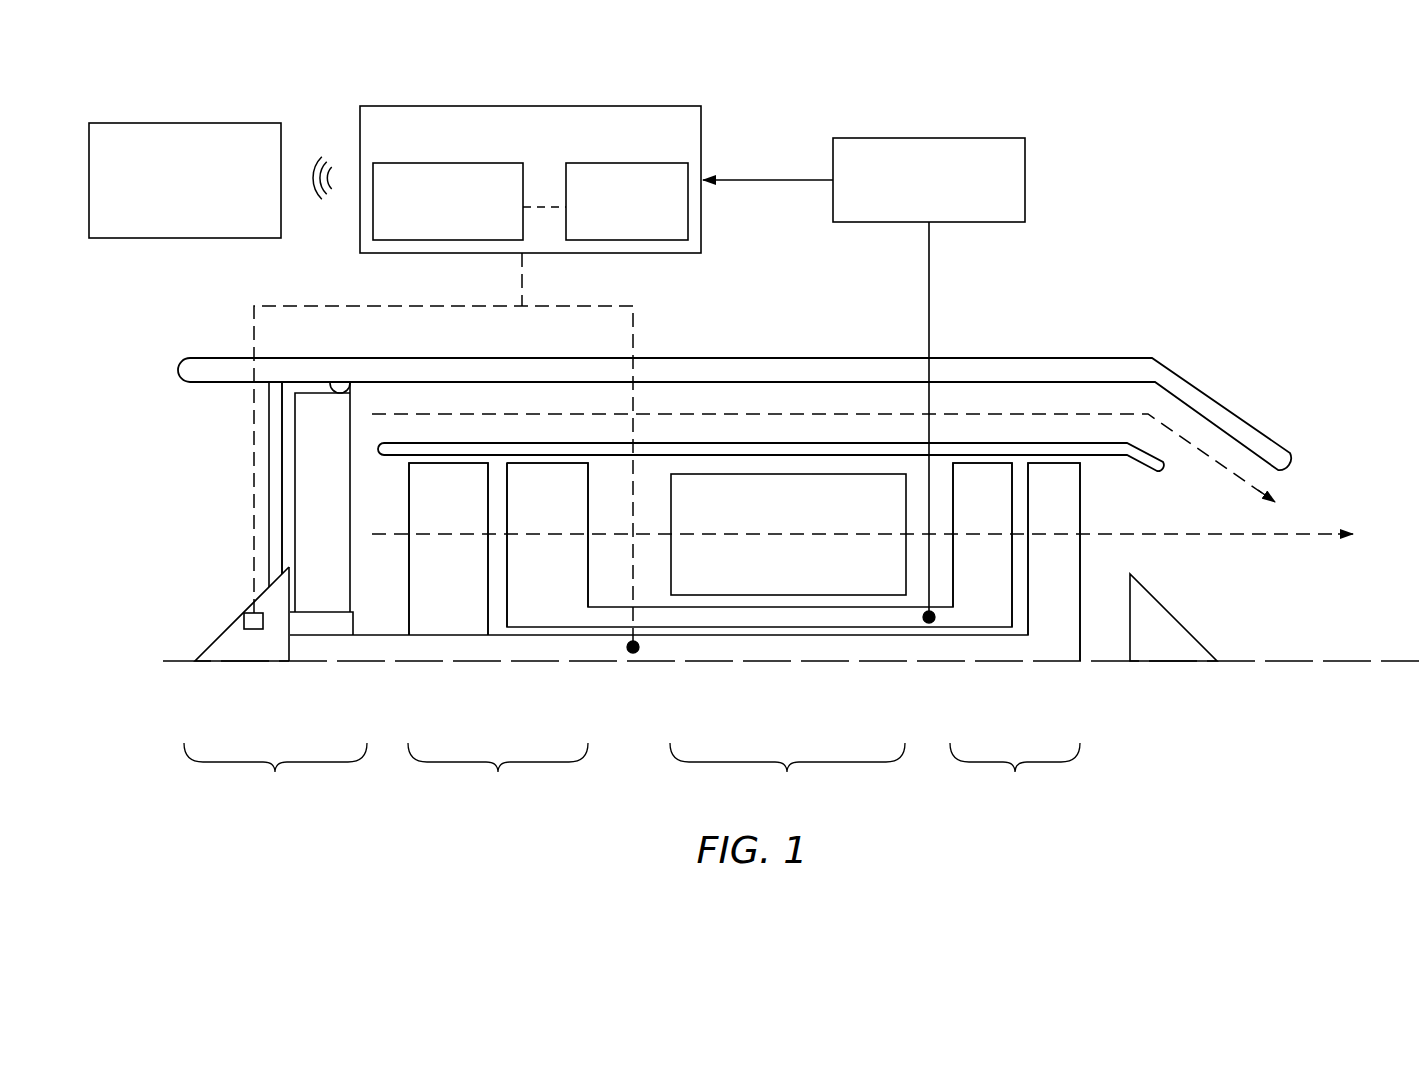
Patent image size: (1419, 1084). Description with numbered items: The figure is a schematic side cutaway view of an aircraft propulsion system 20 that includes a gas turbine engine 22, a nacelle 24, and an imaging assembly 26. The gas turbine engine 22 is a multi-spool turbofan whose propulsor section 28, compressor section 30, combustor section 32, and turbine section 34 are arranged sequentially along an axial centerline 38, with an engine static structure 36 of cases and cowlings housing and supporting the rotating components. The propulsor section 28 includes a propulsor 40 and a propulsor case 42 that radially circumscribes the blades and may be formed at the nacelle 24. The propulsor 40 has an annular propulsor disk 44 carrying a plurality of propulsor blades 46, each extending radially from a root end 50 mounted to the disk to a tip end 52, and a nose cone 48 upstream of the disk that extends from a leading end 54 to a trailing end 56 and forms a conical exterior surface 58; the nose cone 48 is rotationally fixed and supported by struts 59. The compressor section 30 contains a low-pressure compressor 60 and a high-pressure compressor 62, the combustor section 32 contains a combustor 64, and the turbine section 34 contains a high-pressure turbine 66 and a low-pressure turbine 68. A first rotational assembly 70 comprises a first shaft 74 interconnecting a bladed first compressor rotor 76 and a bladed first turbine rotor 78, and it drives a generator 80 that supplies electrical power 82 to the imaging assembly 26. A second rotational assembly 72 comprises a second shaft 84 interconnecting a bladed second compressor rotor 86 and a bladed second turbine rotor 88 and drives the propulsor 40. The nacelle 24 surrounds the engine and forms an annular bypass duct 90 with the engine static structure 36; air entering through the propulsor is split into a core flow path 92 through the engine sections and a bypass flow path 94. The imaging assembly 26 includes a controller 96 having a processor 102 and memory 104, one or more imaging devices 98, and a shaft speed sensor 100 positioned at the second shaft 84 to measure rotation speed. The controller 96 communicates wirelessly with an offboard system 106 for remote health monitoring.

The propulsion system 20 is at (1257, 204).
The gas turbine engine 22 is at (1108, 430).
The nacelle 24 is at (1142, 343).
The imaging assembly 26 is at (530, 133).
The propulsor section 28 is at (275, 774).
The compressor section 30 is at (498, 774).
The combustor section 32 is at (787, 774).
The turbine section 34 is at (1015, 774).
The engine static structure 36 is at (1033, 447).
The axial centerline 38 is at (1400, 661).
The propulsor 40 is at (228, 579).
The propulsor case 42 is at (348, 388).
The propulsor disk 44 is at (323, 628).
The propulsor blades 46 is at (298, 483).
The nose cone 48 is at (222, 642).
The root end 50 is at (328, 610).
The tip end 52 is at (310, 394).
The leading end 54 is at (192, 658).
The trailing end 56 is at (293, 645).
The exterior surface 58 is at (243, 613).
The struts 59 is at (268, 432).
The low-pressure compressor 60 is at (497, 557).
The high-pressure compressor 62 is at (599, 564).
The combustor 64 is at (748, 582).
The high-pressure turbine 66 is at (945, 567).
The low-pressure turbine 68 is at (1088, 580).
The first rotational assembly 70 is at (609, 478).
The second rotational assembly 72 is at (1102, 506).
The first shaft 74 is at (855, 615).
The bladed first compressor rotor 76 is at (534, 508).
The bladed first turbine rotor 78 is at (970, 508).
The generator 80 is at (917, 212).
The electrical power 82 is at (764, 178).
The second shaft 84 is at (840, 646).
The bladed second compressor rotor 86 is at (435, 508).
The bladed second turbine rotor 88 is at (1041, 508).
The bypass duct 90 is at (862, 395).
The core flow path 92 is at (1233, 534).
The bypass flow path 94 is at (1210, 460).
The controller 96 is at (418, 106).
The imaging devices 98 is at (252, 613).
The shaft speed sensor 100 is at (640, 650).
The processor 102 is at (430, 234).
The memory 104 is at (609, 234).
The offboard systems 106 is at (167, 227).